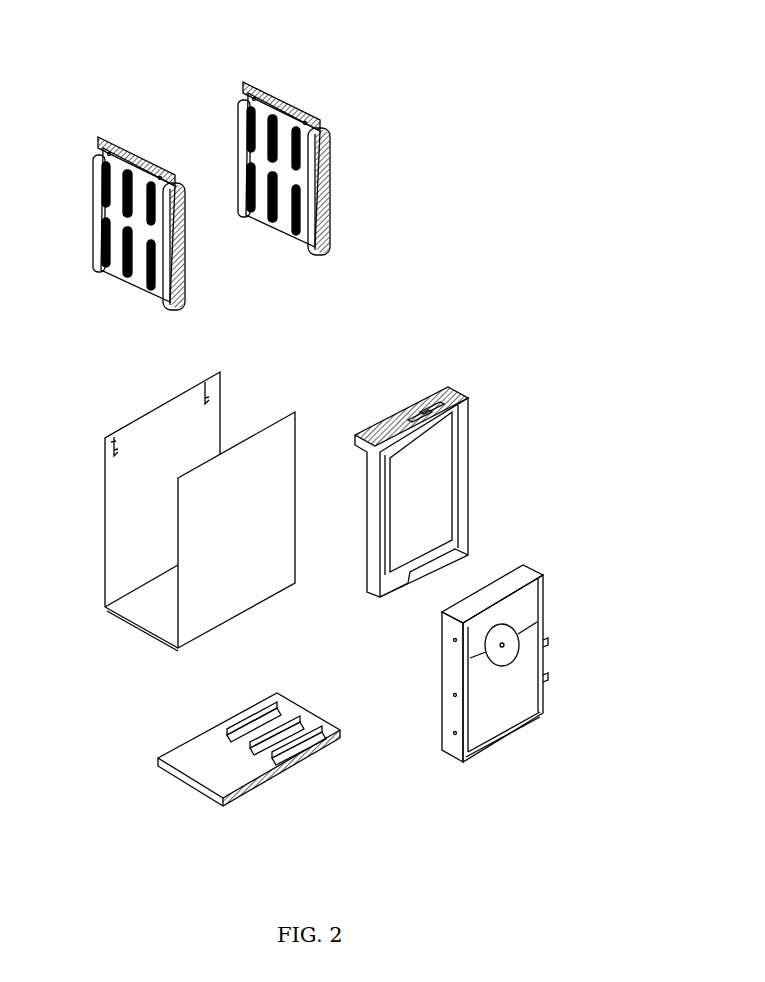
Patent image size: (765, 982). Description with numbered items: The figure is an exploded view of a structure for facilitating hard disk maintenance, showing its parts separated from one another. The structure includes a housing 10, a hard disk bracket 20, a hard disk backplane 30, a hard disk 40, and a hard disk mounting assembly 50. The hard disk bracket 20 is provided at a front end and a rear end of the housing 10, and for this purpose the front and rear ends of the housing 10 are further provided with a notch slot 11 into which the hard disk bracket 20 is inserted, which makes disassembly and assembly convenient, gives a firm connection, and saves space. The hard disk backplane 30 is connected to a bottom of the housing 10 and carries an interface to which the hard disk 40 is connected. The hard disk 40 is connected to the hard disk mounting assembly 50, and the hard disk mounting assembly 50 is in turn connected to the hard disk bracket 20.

The housing 10 is at (164, 520).
The notch slot 11 is at (117, 440).
The hard disk bracket 20 is at (293, 110).
The hard disk backplane 30 is at (220, 763).
The hard disk 40 is at (500, 687).
The hard disk mounting assembly 50 is at (427, 470).